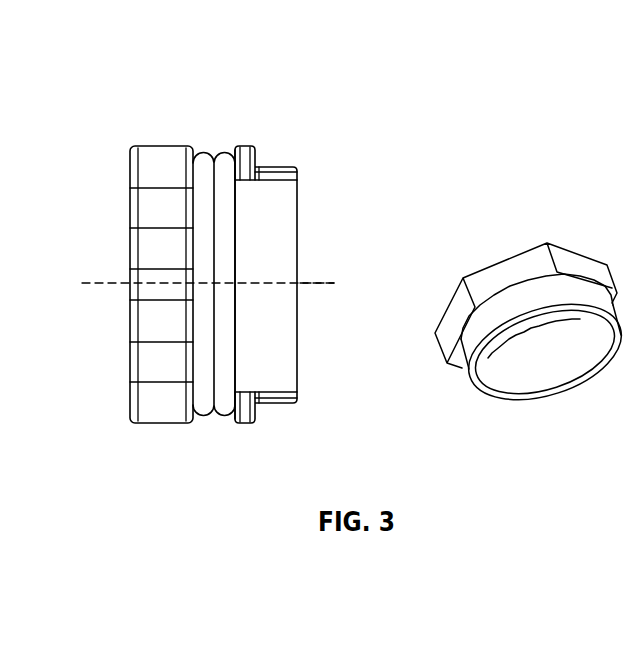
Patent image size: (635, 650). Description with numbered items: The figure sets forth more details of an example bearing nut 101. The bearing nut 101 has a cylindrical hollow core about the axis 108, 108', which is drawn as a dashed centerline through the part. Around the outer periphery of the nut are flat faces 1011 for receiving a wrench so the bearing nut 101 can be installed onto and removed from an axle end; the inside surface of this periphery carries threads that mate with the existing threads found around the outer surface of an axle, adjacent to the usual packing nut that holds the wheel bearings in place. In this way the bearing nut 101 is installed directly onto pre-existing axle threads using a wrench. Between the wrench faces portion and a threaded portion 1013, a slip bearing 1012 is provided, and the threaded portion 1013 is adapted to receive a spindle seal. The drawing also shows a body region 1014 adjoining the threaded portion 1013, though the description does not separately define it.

The bearing nut 101 is at (105, 72).
The flat faces 1011 is at (146, 146).
The slip bearing 1012 is at (213, 413).
The threaded portion 1013 is at (283, 183).
The housing 1014 is at (270, 256).
The axis 108 is at (183, 269).
The axis 108' is at (344, 269).